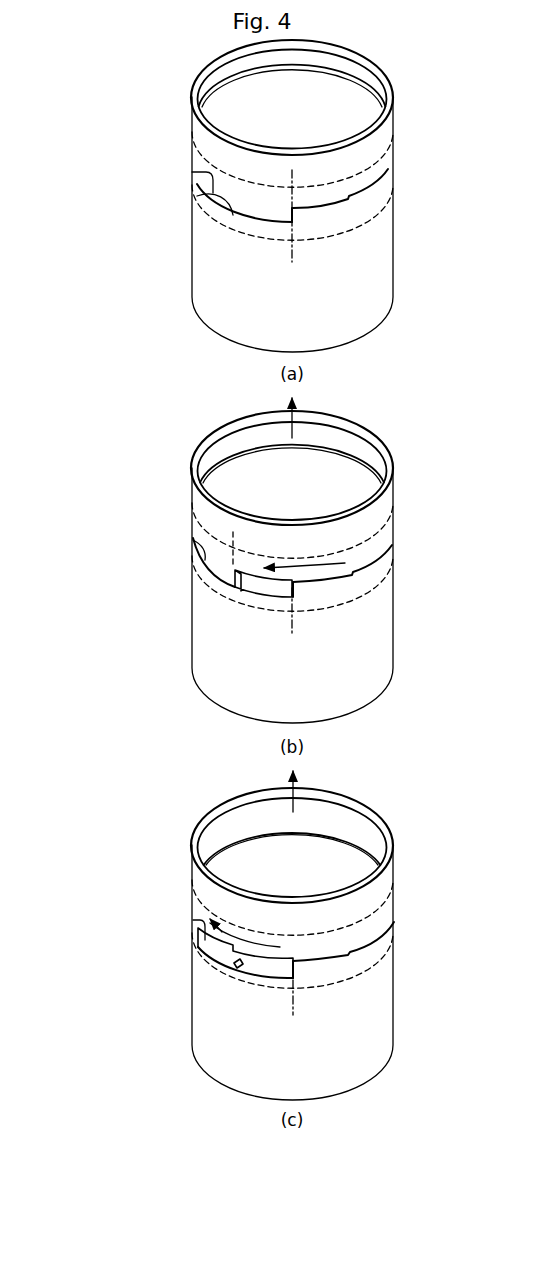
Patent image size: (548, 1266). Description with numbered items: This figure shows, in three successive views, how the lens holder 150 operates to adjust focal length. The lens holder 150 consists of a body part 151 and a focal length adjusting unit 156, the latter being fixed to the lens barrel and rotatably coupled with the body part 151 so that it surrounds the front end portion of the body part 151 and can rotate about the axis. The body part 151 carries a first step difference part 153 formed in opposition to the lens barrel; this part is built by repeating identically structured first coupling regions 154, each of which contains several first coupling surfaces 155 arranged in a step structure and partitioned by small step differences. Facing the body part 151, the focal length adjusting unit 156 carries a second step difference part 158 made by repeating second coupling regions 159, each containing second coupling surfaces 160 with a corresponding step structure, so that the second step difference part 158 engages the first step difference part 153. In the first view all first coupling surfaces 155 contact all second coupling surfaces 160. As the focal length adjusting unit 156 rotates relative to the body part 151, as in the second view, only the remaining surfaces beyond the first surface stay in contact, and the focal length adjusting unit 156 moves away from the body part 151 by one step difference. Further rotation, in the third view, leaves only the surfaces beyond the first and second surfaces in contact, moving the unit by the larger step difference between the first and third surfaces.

The lens holder 150 is at (424, 104).
The body part 151 is at (378, 264).
The first step difference part 153 is at (277, 236).
The first coupling regions 154 is at (394, 226).
The first coupling surfaces 155 is at (250, 220).
The focal length adjusting unit 156 is at (388, 137).
The second step difference part 158 is at (260, 207).
The second coupling regions 159 is at (394, 165).
The second coupling surfaces 160 is at (213, 192).